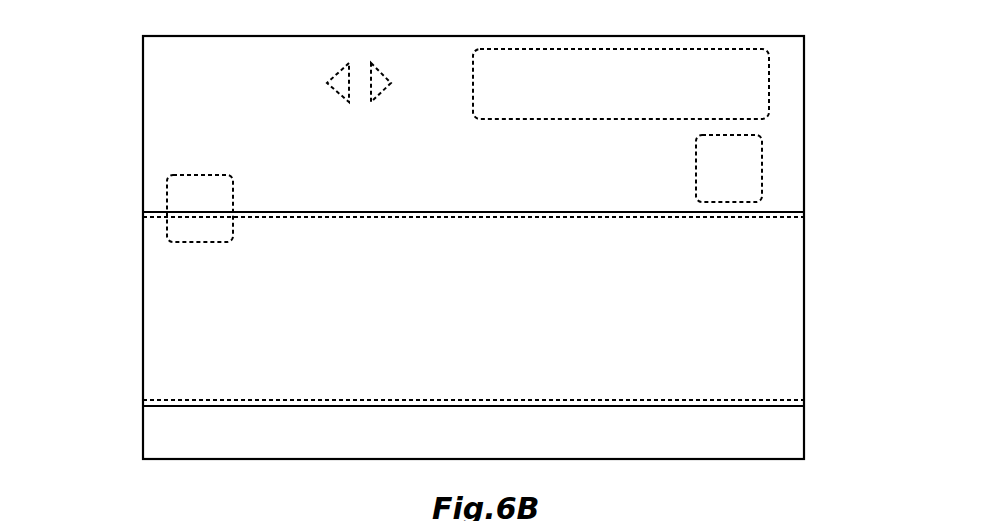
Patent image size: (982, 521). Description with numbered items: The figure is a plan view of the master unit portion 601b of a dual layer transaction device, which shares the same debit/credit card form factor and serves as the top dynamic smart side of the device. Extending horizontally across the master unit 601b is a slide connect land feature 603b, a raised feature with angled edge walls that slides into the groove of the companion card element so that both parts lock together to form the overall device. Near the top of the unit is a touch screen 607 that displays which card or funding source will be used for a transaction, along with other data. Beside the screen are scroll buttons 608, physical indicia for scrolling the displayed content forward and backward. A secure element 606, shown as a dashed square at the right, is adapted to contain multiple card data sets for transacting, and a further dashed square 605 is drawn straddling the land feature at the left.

The master unit portion 601b is at (143, 121).
The slide connect land feature 603b is at (218, 312).
The left selectable element 605 is at (233, 228).
The secure element 606 is at (698, 177).
The touch screen 607 is at (568, 118).
The scroll buttons 608 is at (312, 93).